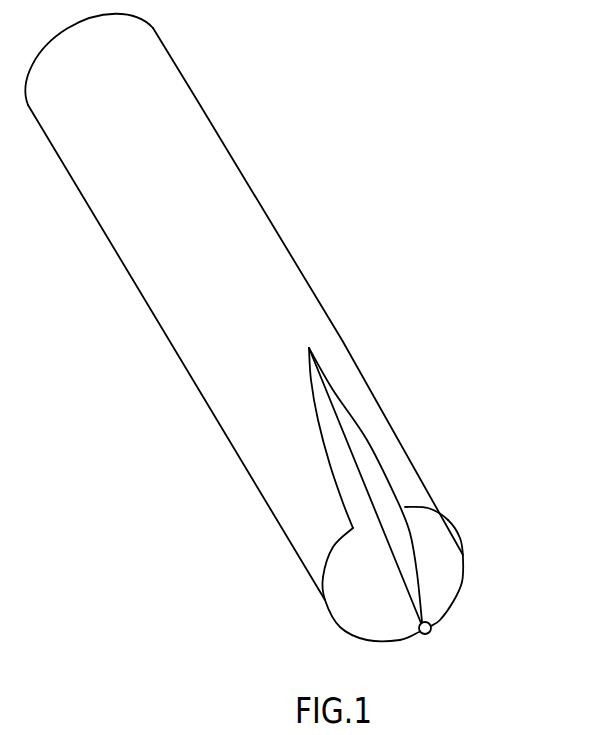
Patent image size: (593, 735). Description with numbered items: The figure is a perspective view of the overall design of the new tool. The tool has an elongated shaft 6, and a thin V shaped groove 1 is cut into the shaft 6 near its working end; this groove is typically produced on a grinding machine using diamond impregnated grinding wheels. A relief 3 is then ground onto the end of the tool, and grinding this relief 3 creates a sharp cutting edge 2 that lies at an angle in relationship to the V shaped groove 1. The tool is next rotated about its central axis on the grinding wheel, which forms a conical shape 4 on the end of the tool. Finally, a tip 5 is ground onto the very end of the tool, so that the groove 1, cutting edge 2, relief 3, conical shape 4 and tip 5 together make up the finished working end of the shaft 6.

The V shaped groove 1 is at (362, 467).
The cutting edge 2 is at (418, 573).
The relief 3 is at (425, 550).
The conical shape 4 is at (448, 580).
The tip 5 is at (430, 635).
The shaft 6 is at (228, 322).